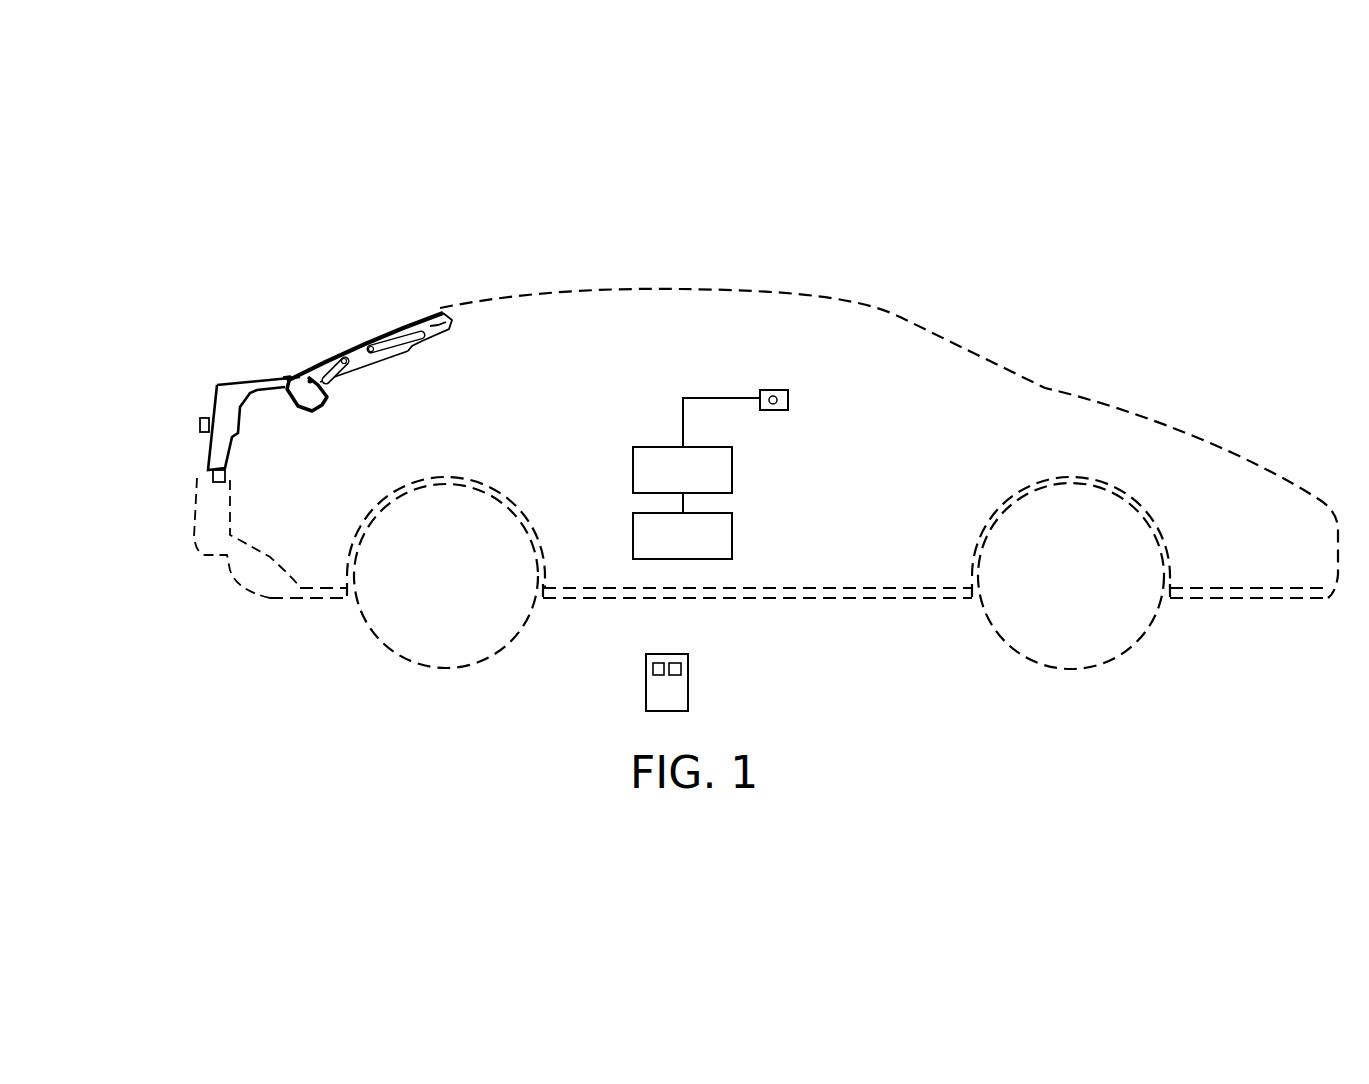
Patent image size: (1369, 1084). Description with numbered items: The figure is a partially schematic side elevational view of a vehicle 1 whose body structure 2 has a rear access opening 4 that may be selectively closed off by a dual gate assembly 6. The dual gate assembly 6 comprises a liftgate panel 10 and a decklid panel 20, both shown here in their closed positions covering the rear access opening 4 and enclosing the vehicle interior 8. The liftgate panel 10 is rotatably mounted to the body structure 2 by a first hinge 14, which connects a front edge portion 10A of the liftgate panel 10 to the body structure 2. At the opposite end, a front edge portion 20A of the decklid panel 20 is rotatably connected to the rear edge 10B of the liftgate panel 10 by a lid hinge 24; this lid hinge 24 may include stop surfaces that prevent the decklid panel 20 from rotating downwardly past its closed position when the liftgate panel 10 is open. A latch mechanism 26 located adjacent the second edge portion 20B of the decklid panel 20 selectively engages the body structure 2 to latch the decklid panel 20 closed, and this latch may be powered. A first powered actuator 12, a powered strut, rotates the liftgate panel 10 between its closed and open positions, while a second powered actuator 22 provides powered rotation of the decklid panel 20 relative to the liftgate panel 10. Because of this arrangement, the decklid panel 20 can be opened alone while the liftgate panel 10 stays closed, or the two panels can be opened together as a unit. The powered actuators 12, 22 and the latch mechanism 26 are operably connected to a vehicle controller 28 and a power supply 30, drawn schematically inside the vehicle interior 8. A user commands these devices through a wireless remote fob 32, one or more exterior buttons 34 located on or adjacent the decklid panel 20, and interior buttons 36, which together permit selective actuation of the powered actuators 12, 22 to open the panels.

The vehicle 1 is at (1020, 326).
The body structure 2 is at (748, 293).
The rear access opening 4 is at (194, 455).
The dual gate assembly 6 is at (281, 347).
The vehicle interior 8 is at (652, 367).
The liftgate panel 10 is at (360, 334).
The front edge portion of liftgate panel 10A is at (431, 315).
The rear edge of liftgate panel 10B is at (307, 375).
The first powered actuator 12 is at (395, 347).
The first hinge 14 is at (438, 312).
The decklid panel 20 is at (207, 402).
The front edge portion of decklid panel 20A is at (283, 387).
The second edge portion of decklid panel 20B is at (203, 465).
The second powered actuator 22 is at (332, 372).
The lid hinge 24 is at (295, 407).
The latch mechanism 26 is at (220, 482).
The vehicle controller 28 is at (722, 472).
The power supply 30 is at (722, 543).
The wireless remote fob 32 is at (688, 685).
The exterior button 34 is at (198, 427).
The interior button 36 is at (785, 390).